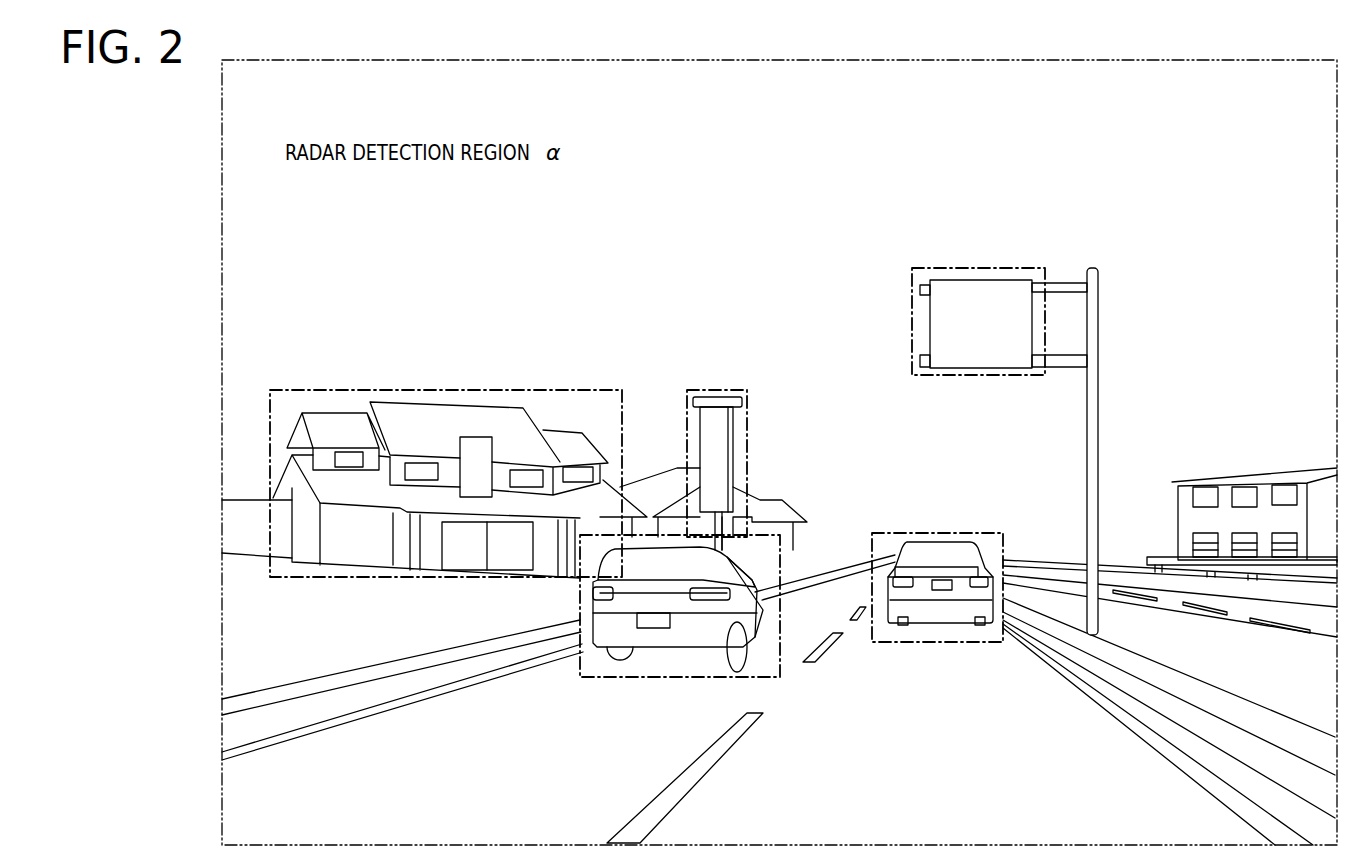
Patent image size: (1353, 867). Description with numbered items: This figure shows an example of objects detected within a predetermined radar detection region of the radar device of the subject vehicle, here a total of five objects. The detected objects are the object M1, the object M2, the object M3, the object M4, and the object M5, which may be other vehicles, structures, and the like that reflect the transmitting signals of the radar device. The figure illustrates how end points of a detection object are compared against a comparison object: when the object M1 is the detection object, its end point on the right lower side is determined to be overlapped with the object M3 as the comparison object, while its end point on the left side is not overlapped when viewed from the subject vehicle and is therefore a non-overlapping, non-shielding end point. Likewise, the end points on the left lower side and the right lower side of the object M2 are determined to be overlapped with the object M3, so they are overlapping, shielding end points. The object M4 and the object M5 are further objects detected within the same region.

The object M1 is at (351, 388).
The object M2 is at (713, 390).
The object M3 is at (778, 556).
The object M4 is at (950, 532).
The object M5 is at (982, 267).